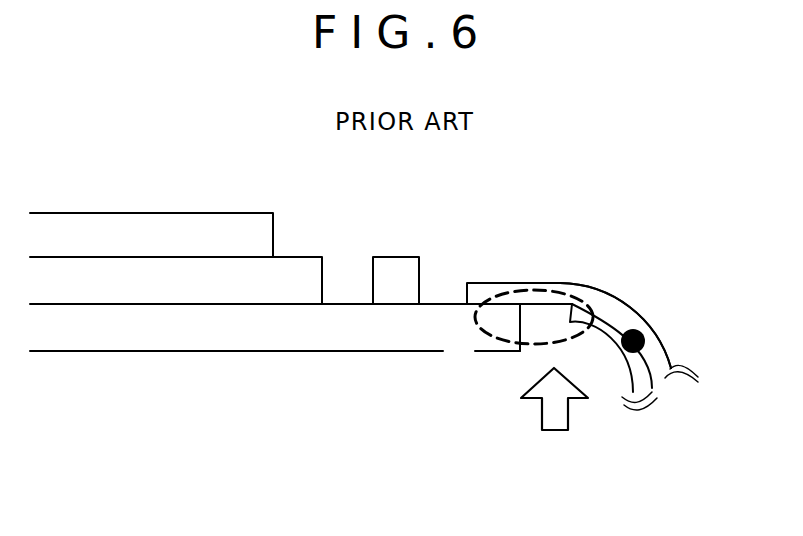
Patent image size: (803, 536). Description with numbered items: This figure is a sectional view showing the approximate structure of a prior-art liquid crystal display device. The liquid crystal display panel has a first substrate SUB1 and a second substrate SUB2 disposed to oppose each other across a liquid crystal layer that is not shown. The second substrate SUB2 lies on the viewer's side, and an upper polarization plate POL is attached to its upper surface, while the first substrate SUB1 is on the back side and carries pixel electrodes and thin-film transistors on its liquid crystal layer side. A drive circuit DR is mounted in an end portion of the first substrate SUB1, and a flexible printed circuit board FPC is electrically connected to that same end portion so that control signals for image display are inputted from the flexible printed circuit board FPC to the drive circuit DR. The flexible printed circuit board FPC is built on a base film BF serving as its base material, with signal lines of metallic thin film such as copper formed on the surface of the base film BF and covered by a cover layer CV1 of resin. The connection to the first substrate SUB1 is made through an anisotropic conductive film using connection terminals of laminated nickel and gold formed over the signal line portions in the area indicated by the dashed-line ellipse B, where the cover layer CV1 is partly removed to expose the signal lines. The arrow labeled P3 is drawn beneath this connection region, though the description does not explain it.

The upper polarization plate POL is at (150, 230).
The second substrate SUB2 is at (147, 290).
The first substrate SUB1 is at (267, 328).
The dashed-line ellipse B is at (275, 353).
The drive circuit DR is at (400, 270).
The flexible printed circuit board FPC is at (636, 330).
The base film BF is at (657, 356).
The cover layer CV1 is at (645, 387).
The pressing direction P3 is at (554, 422).